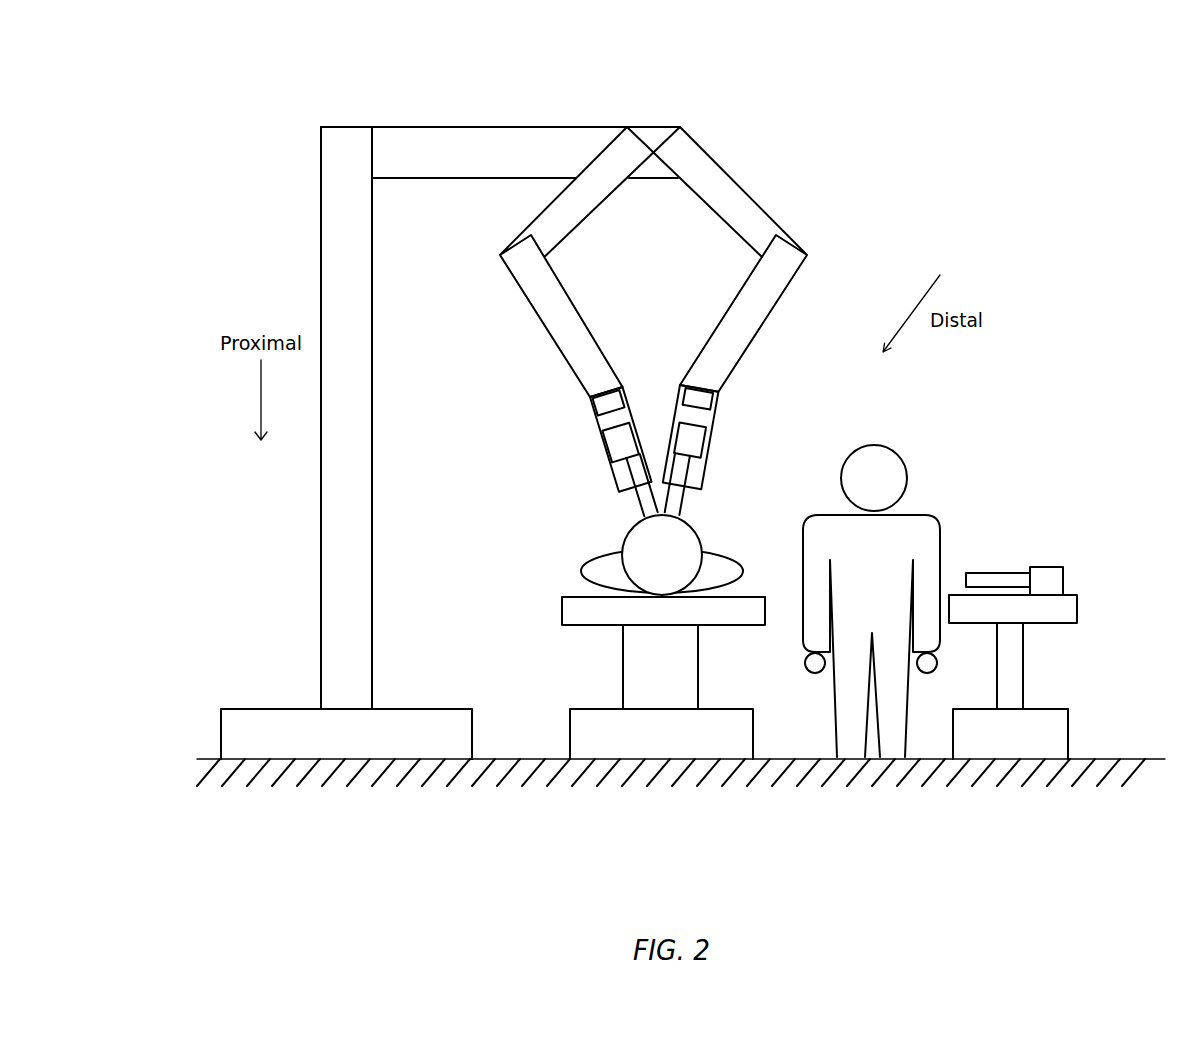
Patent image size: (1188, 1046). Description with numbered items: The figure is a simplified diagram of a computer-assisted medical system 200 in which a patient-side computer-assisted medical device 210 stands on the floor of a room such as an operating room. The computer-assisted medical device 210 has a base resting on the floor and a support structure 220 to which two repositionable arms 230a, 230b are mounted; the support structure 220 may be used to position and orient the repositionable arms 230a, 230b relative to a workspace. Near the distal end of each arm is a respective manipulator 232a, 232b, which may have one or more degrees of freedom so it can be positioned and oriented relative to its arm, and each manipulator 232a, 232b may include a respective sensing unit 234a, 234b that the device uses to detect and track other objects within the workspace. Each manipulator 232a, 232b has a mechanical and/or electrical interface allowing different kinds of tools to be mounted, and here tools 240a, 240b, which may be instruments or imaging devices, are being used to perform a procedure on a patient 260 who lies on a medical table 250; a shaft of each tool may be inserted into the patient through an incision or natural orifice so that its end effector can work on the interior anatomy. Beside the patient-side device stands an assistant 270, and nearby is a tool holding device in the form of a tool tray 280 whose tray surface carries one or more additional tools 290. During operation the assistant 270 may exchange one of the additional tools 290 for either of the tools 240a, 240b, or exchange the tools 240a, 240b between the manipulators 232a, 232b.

The computer-assisted medical system 200 is at (199, 84).
The computer-assisted medical device 210 is at (340, 818).
The support structure 220 is at (424, 127).
The repositionable arm 230a is at (526, 228).
The repositionable arm 230b is at (770, 218).
The manipulator 232a is at (600, 430).
The manipulator 232b is at (717, 423).
The sensing unit 234a is at (593, 410).
The sensing unit 234b is at (728, 393).
The tool 240a is at (636, 502).
The tool 240b is at (688, 505).
The medical table 250 is at (661, 816).
The patient 260 is at (579, 572).
The assistant 270 is at (911, 513).
The tool tray 280 is at (1019, 816).
The additional tools 290 is at (1053, 566).